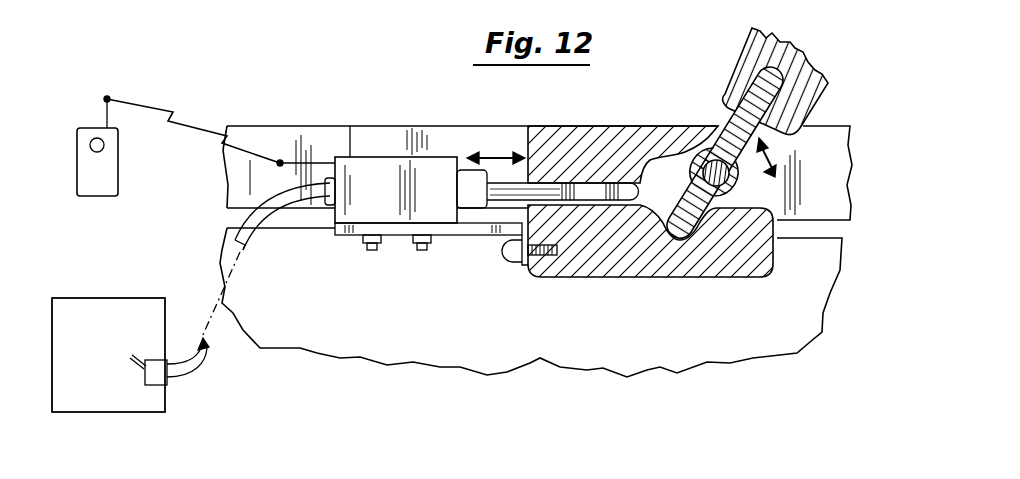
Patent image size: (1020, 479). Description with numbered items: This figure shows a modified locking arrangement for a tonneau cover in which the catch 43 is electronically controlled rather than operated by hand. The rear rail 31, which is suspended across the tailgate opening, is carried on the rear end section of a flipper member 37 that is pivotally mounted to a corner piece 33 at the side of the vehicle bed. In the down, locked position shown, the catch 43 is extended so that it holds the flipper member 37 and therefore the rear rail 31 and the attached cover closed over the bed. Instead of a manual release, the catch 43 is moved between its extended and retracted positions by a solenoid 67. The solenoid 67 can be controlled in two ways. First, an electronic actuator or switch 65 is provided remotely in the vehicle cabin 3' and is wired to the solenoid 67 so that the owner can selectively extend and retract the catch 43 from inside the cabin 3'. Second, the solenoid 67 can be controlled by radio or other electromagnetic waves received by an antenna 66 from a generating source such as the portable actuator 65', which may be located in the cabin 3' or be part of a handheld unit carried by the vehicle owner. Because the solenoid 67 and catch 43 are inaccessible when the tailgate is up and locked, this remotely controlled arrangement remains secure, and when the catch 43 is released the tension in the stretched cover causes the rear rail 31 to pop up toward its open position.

The rear rail 31 is at (808, 60).
The corner piece 33 is at (665, 278).
The flipper member 37 is at (685, 177).
The catch 43 is at (593, 190).
The electronic actuator or switch 65 is at (137, 369).
The portable actuator 65' is at (206, 125).
The antenna 66 is at (308, 163).
The solenoid 67 is at (376, 190).
The vehicle cabin 3' is at (108, 322).